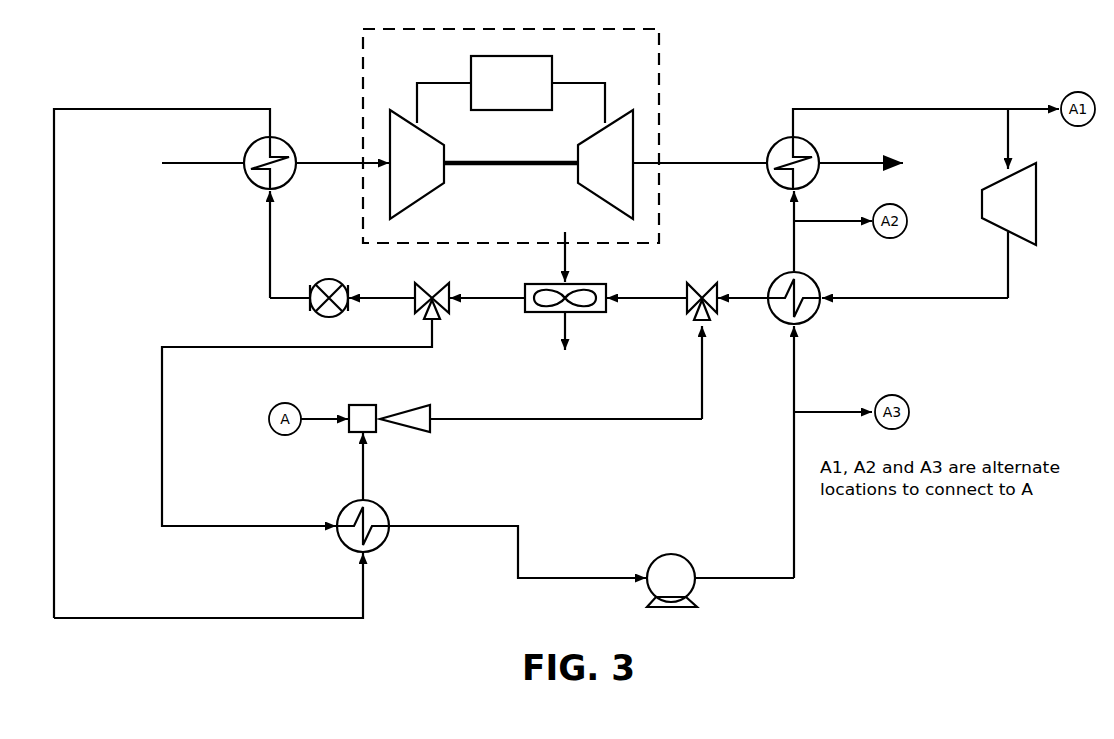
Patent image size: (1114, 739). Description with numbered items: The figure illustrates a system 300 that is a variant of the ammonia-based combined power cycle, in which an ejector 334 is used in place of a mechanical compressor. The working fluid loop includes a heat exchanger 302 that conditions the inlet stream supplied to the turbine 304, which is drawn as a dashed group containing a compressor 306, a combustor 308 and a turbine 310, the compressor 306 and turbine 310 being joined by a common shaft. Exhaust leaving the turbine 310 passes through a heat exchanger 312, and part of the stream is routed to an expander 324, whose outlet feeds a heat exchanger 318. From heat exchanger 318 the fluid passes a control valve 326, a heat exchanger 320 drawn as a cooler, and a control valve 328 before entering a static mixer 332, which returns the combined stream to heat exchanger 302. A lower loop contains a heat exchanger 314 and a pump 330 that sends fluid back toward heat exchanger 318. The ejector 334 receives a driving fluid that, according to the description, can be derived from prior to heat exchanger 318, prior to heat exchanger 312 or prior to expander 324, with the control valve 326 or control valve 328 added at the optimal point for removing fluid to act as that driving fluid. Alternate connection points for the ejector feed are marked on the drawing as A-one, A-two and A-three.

The system 300 is at (173, 81).
The heat exchanger 302 is at (259, 155).
The turbine 304 is at (511, 123).
The compressor 306 is at (484, 164).
The combustor 308 is at (511, 89).
The turbine 310 is at (605, 164).
The heat exchanger 312 is at (802, 155).
The heat exchanger 314 is at (372, 519).
The heat exchanger 318 is at (802, 289).
The heat exchanger 320 is at (567, 286).
The expander 324 is at (1009, 204).
The control valve 326 is at (683, 298).
The control valve 328 is at (413, 297).
The pump 330 is at (680, 572).
The static mixer 332 is at (313, 288).
The ejector 334 is at (378, 406).